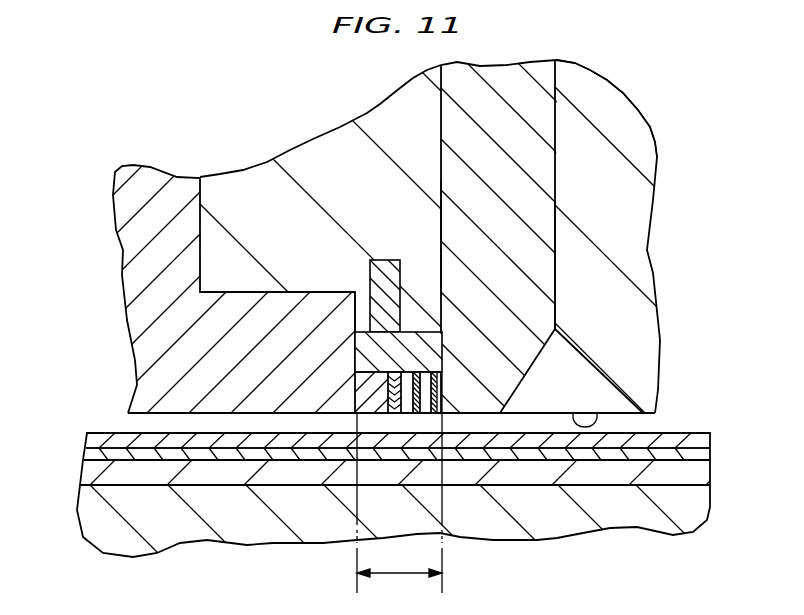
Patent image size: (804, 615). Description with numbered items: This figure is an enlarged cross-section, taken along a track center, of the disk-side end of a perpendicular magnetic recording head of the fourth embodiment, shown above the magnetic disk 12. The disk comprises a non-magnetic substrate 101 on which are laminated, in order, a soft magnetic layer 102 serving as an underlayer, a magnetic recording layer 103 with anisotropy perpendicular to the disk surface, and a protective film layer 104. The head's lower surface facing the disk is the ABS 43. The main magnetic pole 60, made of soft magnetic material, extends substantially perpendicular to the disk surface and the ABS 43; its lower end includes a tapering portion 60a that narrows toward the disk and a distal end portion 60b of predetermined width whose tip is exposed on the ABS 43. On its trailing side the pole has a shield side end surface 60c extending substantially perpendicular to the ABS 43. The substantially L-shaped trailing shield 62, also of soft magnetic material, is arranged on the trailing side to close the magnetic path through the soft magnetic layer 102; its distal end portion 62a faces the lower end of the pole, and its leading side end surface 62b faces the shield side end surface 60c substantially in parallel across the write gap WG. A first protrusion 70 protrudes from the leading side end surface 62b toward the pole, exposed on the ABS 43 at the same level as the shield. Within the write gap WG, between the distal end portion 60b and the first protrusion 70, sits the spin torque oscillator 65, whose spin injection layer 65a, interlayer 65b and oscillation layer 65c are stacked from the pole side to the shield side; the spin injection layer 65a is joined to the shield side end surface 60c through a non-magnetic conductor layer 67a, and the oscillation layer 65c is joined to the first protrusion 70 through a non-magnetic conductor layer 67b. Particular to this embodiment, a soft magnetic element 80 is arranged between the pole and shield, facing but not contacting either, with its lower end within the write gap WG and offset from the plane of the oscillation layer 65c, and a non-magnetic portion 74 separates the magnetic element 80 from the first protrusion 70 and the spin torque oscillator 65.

The magnetic disk 12 is at (62, 433).
The ABS 43 is at (597, 413).
The main magnetic pole 60 is at (468, 95).
The tapering portion 60a is at (540, 137).
The distal end portion 60b is at (518, 305).
The shield side end surface 60c is at (440, 243).
The trailing shield 62 is at (120, 200).
The distal end portion 62a is at (253, 387).
The leading side end surface 62b is at (350, 320).
The spin torque oscillator 65 is at (417, 348).
The spin injection layer 65a is at (425, 413).
The interlayer 65b is at (417, 413).
The oscillation layer 65c is at (408, 413).
The non-magnetic conductor layer 67a is at (433, 413).
The non-magnetic conductor layer 67b is at (373, 413).
The first protrusion 70 is at (400, 413).
The non-magnetic portion 74 is at (357, 350).
The magnetic element 80 is at (372, 260).
The substrate 101 is at (703, 512).
The soft magnetic layer 102 is at (703, 468).
The magnetic recording layer 103 is at (703, 450).
The protective film layer 104 is at (693, 430).
The write gap WG is at (399, 513).